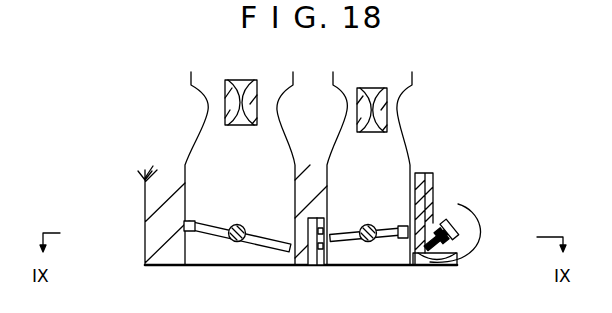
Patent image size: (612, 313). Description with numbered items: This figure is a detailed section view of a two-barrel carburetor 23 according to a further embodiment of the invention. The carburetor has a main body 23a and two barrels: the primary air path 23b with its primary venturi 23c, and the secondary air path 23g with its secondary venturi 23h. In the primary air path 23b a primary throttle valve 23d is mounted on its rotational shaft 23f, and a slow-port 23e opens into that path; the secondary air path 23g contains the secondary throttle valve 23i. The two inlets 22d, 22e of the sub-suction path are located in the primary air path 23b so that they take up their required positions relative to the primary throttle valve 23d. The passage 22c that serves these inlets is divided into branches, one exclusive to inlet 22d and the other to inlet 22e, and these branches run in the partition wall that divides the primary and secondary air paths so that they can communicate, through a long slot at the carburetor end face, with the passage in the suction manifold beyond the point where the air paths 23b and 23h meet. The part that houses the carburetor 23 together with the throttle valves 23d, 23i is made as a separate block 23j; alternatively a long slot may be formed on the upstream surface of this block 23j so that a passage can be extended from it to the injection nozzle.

The two-barrel carburetor 23 is at (446, 168).
The secondary venturi 23h is at (208, 113).
The primary venturi 23c is at (400, 111).
The primary air path 23b is at (410, 170).
The separate block 23j is at (146, 224).
The main body 23a is at (145, 182).
The secondary air path 23g is at (205, 258).
The secondary throttle valve 23i is at (195, 232).
The passage 22c is at (312, 266).
The inlet 22d is at (329, 224).
The inlet 22e is at (368, 242).
The rotational shaft of the primary throttle valve 23f is at (394, 238).
The primary throttle valve 23d is at (443, 275).
The slow-port 23e is at (441, 219).